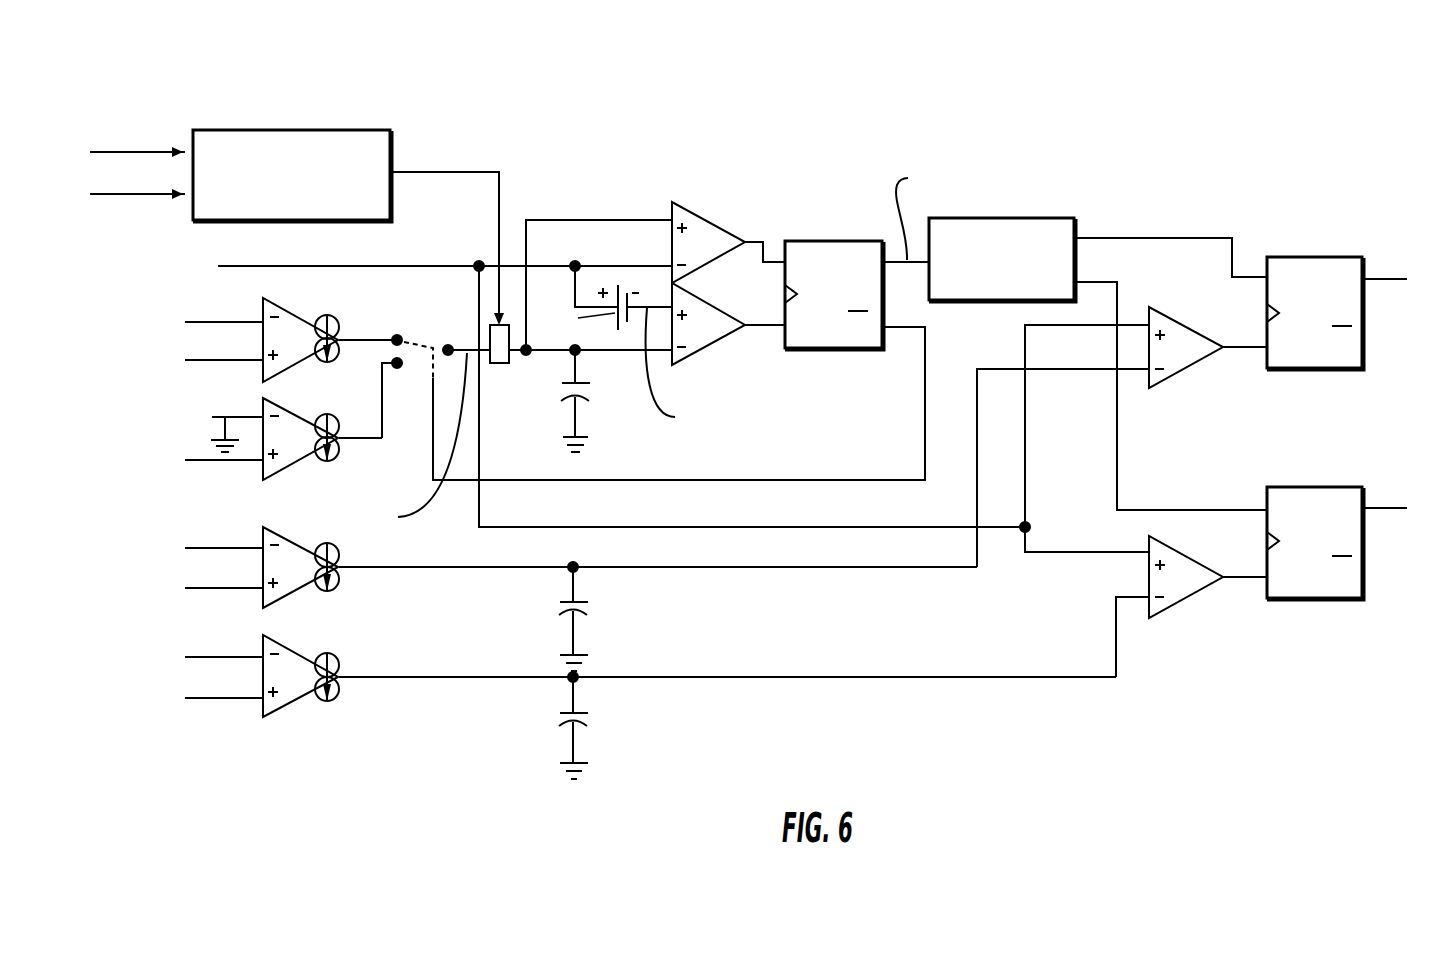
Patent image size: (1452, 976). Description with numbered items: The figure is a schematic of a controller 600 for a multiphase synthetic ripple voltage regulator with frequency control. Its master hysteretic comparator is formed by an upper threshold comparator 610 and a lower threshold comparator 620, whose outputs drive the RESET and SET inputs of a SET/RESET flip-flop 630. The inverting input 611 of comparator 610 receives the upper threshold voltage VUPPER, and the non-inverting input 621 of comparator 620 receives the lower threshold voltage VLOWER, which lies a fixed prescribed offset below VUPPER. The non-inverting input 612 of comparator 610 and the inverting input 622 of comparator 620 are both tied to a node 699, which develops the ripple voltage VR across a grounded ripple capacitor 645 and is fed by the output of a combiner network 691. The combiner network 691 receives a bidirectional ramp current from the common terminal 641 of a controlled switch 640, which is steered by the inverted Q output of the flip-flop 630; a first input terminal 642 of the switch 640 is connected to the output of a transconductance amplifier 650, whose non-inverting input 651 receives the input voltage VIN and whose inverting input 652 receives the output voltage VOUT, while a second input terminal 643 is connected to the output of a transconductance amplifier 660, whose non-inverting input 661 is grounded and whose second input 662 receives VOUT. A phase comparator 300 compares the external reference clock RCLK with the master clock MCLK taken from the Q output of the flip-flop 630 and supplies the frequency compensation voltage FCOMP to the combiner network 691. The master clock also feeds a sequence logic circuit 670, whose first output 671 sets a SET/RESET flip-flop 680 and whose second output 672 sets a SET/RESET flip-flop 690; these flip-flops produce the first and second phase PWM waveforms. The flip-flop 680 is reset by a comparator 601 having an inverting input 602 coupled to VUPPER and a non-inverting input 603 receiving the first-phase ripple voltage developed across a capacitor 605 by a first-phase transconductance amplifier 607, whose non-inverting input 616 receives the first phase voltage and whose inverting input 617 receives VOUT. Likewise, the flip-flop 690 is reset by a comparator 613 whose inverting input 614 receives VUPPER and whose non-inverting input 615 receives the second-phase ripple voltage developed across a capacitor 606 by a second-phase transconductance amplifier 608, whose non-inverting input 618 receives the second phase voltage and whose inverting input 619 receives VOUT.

The phase comparator 300 is at (363, 130).
The controller 600 is at (758, 409).
The comparator 601 is at (1187, 325).
The inverting input 602 is at (1140, 323).
The non-inverting input 603 is at (1140, 388).
The capacitor 605 is at (590, 610).
The capacitor 606 is at (590, 720).
The PHASE 1 transconductance amplifier 607 is at (287, 598).
The PHASE 2 transconductance amplifier 608 is at (287, 708).
The upper threshold comparator 610 is at (695, 213).
The inverting input 611 is at (668, 262).
The non-inverting input 612 is at (647, 218).
The comparator 613 is at (1200, 565).
The inverting input 614 is at (1135, 552).
The non-inverting input 615 is at (1137, 598).
The non-inverting input 616 is at (263, 542).
The inverting input 617 is at (263, 594).
The non-inverting input 618 is at (263, 650).
The inverting input 619 is at (263, 703).
The lower threshold comparator 620 is at (717, 342).
The non-inverting input 621 is at (687, 307).
The inverting input 622 is at (663, 351).
The SET/RESET flip-flop 630 is at (813, 241).
The controlled switch 640 is at (421, 360).
The common terminal 641 is at (447, 346).
The first input terminal 642 is at (395, 338).
The second input terminal 643 is at (396, 360).
The ripple capacitor 645 is at (562, 393).
The transconductance amplifier 650 is at (303, 318).
The non-inverting input 651 is at (263, 318).
The inverting input 652 is at (263, 366).
The transconductance amplifier 660 is at (287, 468).
The non-inverting input 661 is at (212, 417).
The second input 662 is at (263, 462).
The sequence logic circuit 670 is at (1057, 218).
The first output 671 is at (1077, 238).
The second output 672 is at (1075, 282).
The SET/RESET flip-flop 680 is at (1298, 257).
The SET/RESET flip-flop 690 is at (1298, 487).
The combiner network 691 is at (497, 364).
The node 699 is at (627, 312).